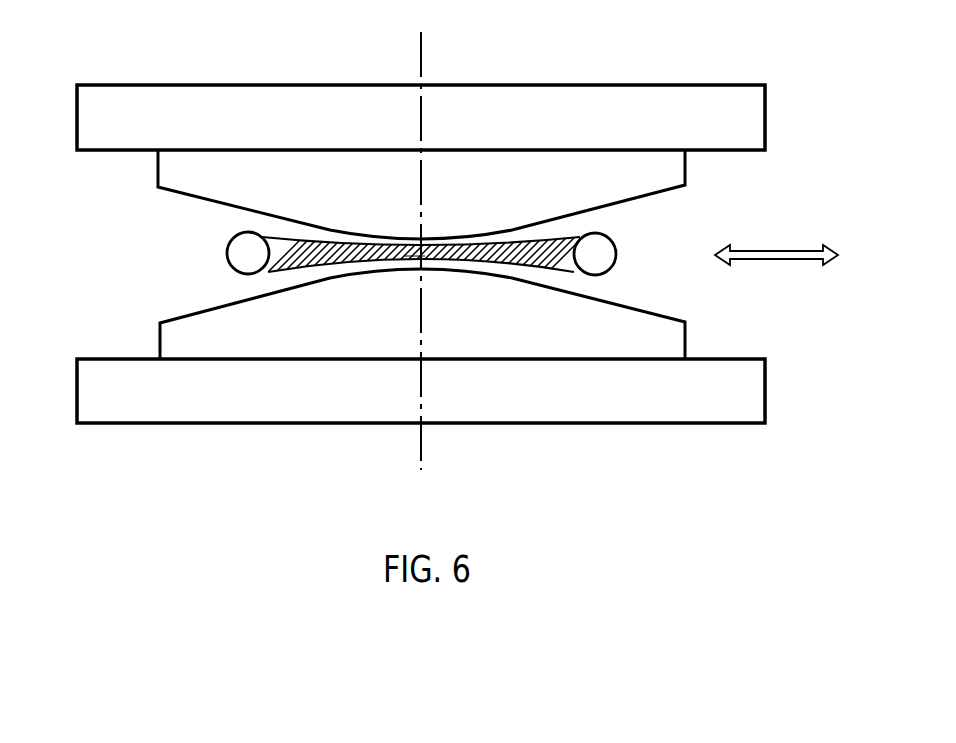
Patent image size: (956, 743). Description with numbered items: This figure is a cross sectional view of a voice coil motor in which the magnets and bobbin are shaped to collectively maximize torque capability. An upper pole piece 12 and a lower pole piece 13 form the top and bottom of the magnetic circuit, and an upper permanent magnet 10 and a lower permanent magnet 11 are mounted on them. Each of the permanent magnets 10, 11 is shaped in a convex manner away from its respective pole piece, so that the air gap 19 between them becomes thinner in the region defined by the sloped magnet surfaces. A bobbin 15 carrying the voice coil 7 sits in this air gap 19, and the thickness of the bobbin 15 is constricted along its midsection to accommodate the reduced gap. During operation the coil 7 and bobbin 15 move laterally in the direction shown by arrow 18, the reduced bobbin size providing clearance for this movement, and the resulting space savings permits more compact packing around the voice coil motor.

The voice coil 7 is at (230, 251).
The upper permanent magnet 10 is at (687, 172).
The lower permanent magnet 11 is at (688, 337).
The upper pole piece 12 is at (763, 115).
The lower pole piece 13 is at (763, 393).
The bobbin 15 is at (275, 273).
The arrow 18 is at (790, 262).
The air gap 19 is at (415, 258).